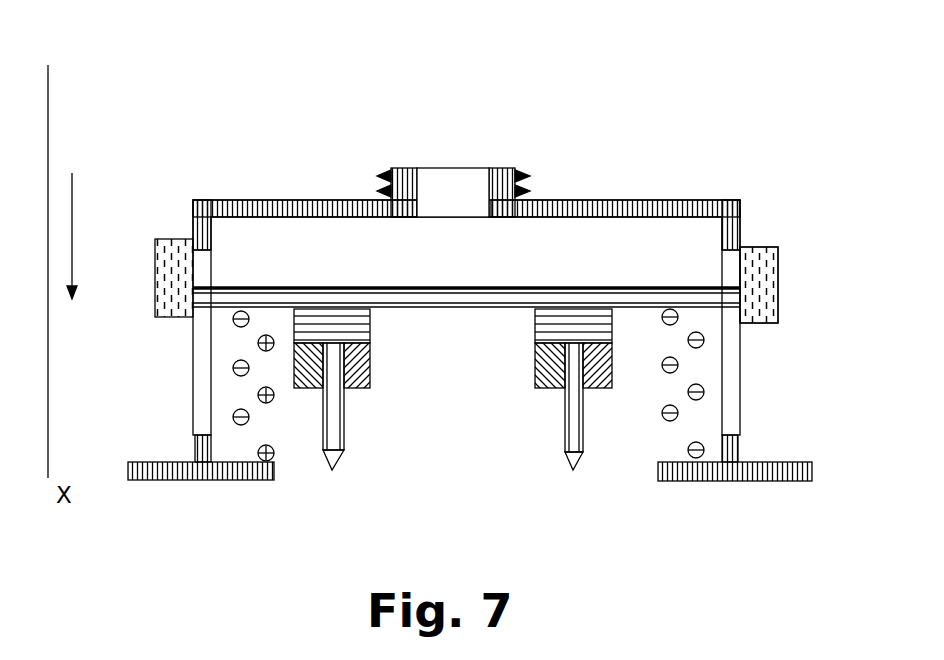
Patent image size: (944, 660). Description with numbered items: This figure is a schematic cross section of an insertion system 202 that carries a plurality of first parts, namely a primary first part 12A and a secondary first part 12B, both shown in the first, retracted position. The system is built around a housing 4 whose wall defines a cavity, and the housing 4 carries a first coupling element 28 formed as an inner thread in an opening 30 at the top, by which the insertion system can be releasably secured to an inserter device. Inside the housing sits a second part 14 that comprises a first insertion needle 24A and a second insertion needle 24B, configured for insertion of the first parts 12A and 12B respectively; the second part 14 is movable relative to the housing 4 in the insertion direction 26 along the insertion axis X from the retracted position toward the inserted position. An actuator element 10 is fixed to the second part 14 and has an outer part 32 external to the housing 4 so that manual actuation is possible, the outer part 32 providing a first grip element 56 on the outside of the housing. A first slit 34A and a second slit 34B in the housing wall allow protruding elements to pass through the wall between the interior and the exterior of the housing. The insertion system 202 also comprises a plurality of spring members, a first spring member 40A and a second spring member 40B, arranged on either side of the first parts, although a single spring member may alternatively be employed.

The insertion system 202 is at (322, 94).
The first coupling element 28 is at (383, 170).
The opening 30 is at (460, 185).
The insertion direction 26 is at (72, 185).
The actuator element 10 is at (764, 247).
The outer part 32 is at (778, 277).
The first grip element 56 is at (174, 278).
The second part 14 is at (460, 287).
The first slit 34A is at (738, 362).
The second slit 34B is at (202, 361).
The housing 4 is at (175, 463).
The primary first part 12A is at (358, 383).
The secondary first part 12B is at (537, 388).
The first insertion needle 24A is at (338, 455).
The second insertion needle 24B is at (573, 458).
The first spring member 40A is at (273, 452).
The second spring member 40B is at (668, 418).